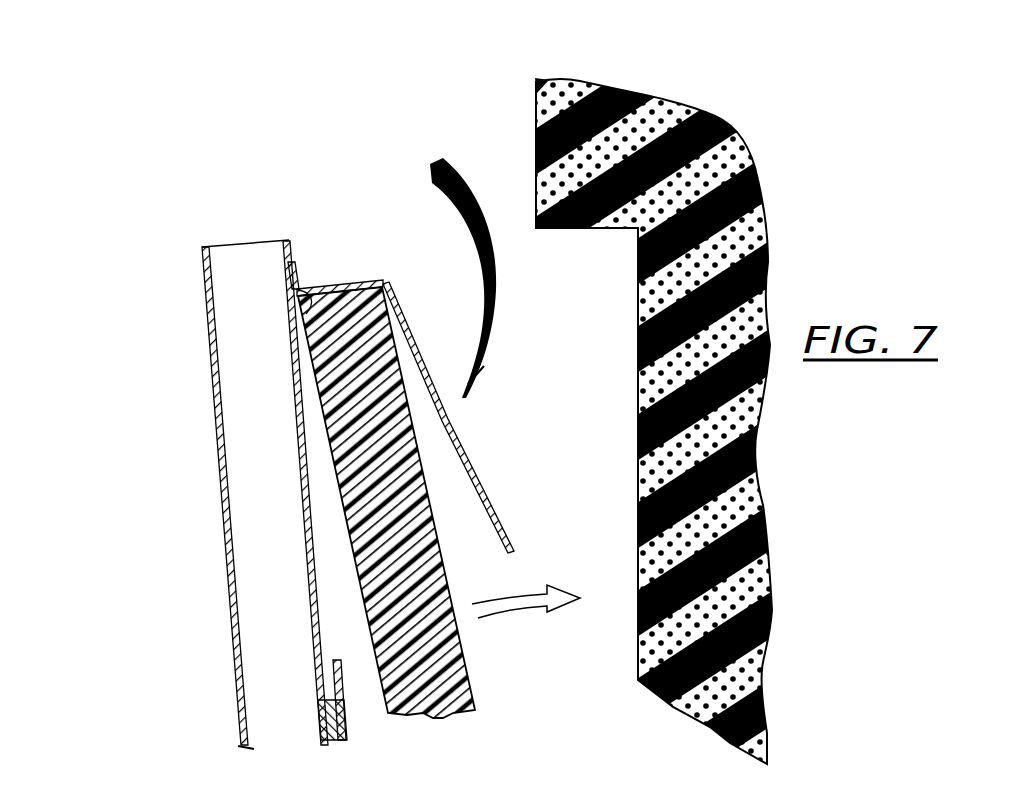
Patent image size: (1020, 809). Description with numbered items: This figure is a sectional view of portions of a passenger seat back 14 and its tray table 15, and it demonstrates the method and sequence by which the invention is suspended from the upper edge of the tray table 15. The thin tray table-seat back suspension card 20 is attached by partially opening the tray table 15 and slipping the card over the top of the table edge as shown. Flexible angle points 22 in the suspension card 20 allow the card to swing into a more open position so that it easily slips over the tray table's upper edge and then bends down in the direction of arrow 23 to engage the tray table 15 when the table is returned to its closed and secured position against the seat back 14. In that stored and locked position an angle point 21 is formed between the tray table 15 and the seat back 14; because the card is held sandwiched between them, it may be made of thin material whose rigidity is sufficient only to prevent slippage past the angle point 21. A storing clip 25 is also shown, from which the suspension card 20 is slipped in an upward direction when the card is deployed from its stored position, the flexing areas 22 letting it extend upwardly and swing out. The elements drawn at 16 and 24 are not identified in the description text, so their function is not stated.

The seat back 14 is at (565, 103).
The tray table 15 is at (297, 287).
The channel outer wall 16 is at (231, 418).
The suspension card 20 is at (473, 487).
The angle point 21 is at (637, 233).
The flexible angle points 22 is at (382, 280).
The arrow 23 is at (451, 273).
The pressing direction arrow 24 is at (526, 619).
The storing clip 25 is at (343, 677).